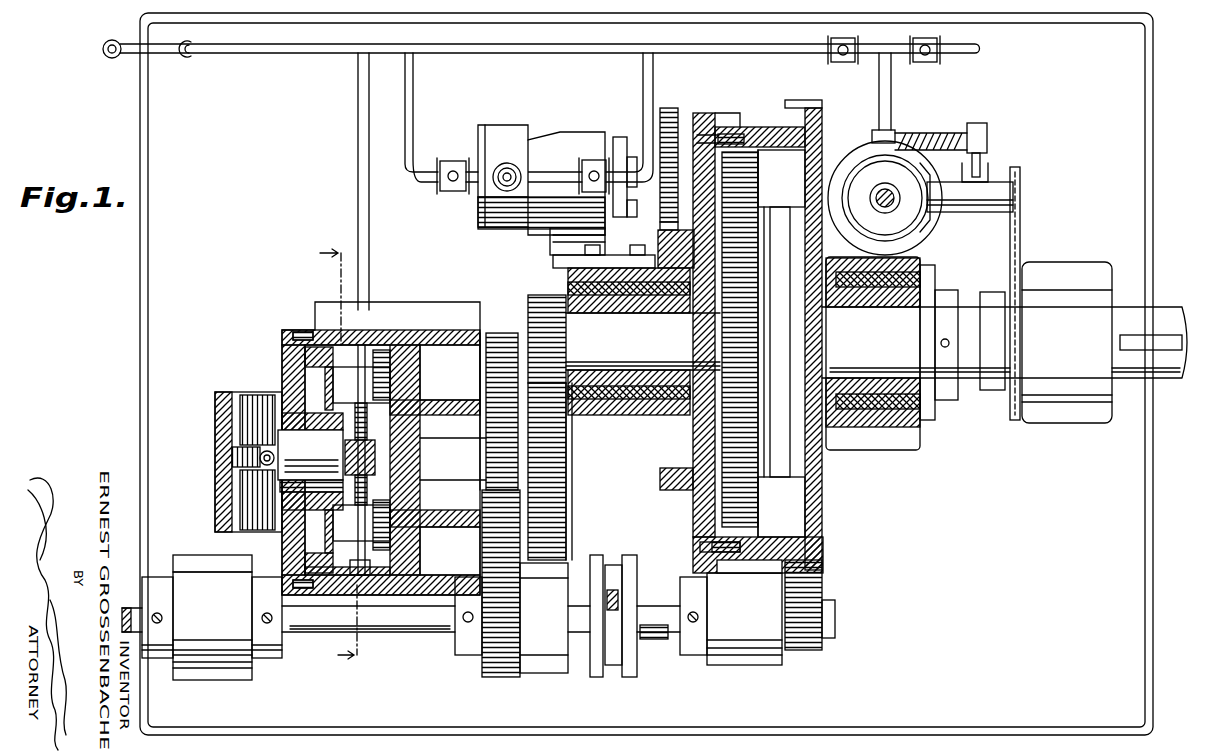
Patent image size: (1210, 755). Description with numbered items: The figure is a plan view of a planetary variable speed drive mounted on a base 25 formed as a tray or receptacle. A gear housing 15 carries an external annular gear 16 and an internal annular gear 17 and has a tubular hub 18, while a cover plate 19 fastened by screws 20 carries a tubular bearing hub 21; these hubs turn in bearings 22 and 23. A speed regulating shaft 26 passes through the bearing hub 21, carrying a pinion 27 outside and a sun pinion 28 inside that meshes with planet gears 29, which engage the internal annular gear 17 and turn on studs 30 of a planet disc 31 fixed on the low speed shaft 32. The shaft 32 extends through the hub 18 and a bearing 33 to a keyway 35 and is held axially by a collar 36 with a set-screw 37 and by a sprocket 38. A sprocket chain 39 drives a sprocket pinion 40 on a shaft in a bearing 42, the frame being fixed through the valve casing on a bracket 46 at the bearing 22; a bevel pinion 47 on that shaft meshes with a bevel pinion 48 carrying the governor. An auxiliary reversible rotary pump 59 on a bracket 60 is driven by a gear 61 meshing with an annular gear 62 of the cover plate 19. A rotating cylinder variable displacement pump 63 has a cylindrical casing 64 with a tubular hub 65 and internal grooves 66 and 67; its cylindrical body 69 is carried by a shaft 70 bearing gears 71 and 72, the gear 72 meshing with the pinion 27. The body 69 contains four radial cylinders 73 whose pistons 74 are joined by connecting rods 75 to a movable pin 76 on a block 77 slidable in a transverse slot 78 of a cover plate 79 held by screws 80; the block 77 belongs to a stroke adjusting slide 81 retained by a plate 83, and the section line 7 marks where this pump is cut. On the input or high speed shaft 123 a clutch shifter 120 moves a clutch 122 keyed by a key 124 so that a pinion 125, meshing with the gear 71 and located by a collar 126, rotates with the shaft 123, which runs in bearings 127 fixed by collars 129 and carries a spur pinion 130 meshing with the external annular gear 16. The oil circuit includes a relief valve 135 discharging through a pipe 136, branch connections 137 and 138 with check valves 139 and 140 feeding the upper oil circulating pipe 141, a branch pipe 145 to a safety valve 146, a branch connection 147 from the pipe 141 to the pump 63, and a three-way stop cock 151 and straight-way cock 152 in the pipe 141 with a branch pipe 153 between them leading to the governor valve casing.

The section line 7 is at (340, 462).
The gear housing 15 is at (770, 127).
The external annular gear 16 is at (810, 100).
The internal annular gear 17 is at (781, 178).
The tubular hub 18 is at (880, 427).
The cover plate 19 is at (712, 115).
The screws 20 is at (700, 130).
The tubular bearing hub 21 is at (645, 298).
The bearing 22 is at (928, 420).
The bearing 23 is at (615, 415).
The base 25 is at (1145, 588).
The speed regulating shaft 26 is at (643, 341).
The pinion 27 is at (532, 294).
The sun pinion 28 is at (722, 330).
The planet gears 29 is at (762, 258).
The studs 30 is at (781, 507).
The planet disc 31 is at (784, 207).
The low speed shaft 32 is at (1176, 280).
The bearing 33 is at (1076, 262).
The keyway 35 is at (1168, 352).
The collar 36 is at (948, 400).
The set-screw 37 is at (950, 338).
The sprocket 38 is at (992, 392).
The sprocket chain 39 is at (1020, 240).
The sprocket pinion 40 is at (1016, 170).
The bearing 42 is at (962, 210).
The bracket 46 is at (926, 238).
The bevel pinion 47 is at (968, 150).
The bevel pinion 48 is at (866, 178).
The auxiliary reversible rotary pump 59 is at (520, 128).
The bracket 60 is at (553, 262).
The gear 61 is at (660, 114).
The annular gear 62 is at (656, 222).
The rotating cylinder variable displacement pump 63 is at (436, 360).
The cylindrical casing 64 is at (318, 322).
The tubular hub 65 is at (458, 400).
The internal groove 66 is at (368, 352).
The internal groove 67 is at (356, 590).
The cylindrical body 69 is at (412, 350).
The shaft 70 is at (453, 506).
The gear 71 is at (498, 332).
The gear 72 is at (570, 470).
The cylinders 73 is at (305, 356).
The pistons 74 is at (333, 382).
The connecting rods 75 is at (372, 425).
The movable pin 76 is at (378, 452).
The block 77 is at (310, 461).
The transverse slot 78 is at (258, 462).
The cover plate 79 is at (305, 570).
The screws 80 is at (291, 336).
The stroke adjusting slide 81 is at (240, 412).
The plate 83 is at (218, 447).
The clutch shifter 120 is at (620, 598).
The clutch 122 is at (632, 678).
The input or high speed shaft 123 is at (422, 634).
The key 124 is at (656, 640).
The pinion 125 is at (498, 676).
The collar 126 is at (452, 642).
The bearings 127 is at (760, 672).
The collars 129 is at (158, 660).
The spur pinion 130 is at (812, 650).
The relief valve 135 is at (506, 190).
The pipe 136 is at (522, 166).
The branch connection 137 is at (413, 100).
The branch connection 138 is at (643, 80).
The check valve 139 is at (445, 188).
The check valve 140 is at (590, 168).
The upper oil circulating pipe 141 is at (308, 58).
The branch pipe 145 is at (182, 58).
The safety valve 146 is at (106, 58).
The branch connection 147 is at (358, 200).
The three-way stop cock 151 is at (852, 38).
The straight-way cock 152 is at (940, 38).
The branch pipe 153 is at (891, 108).